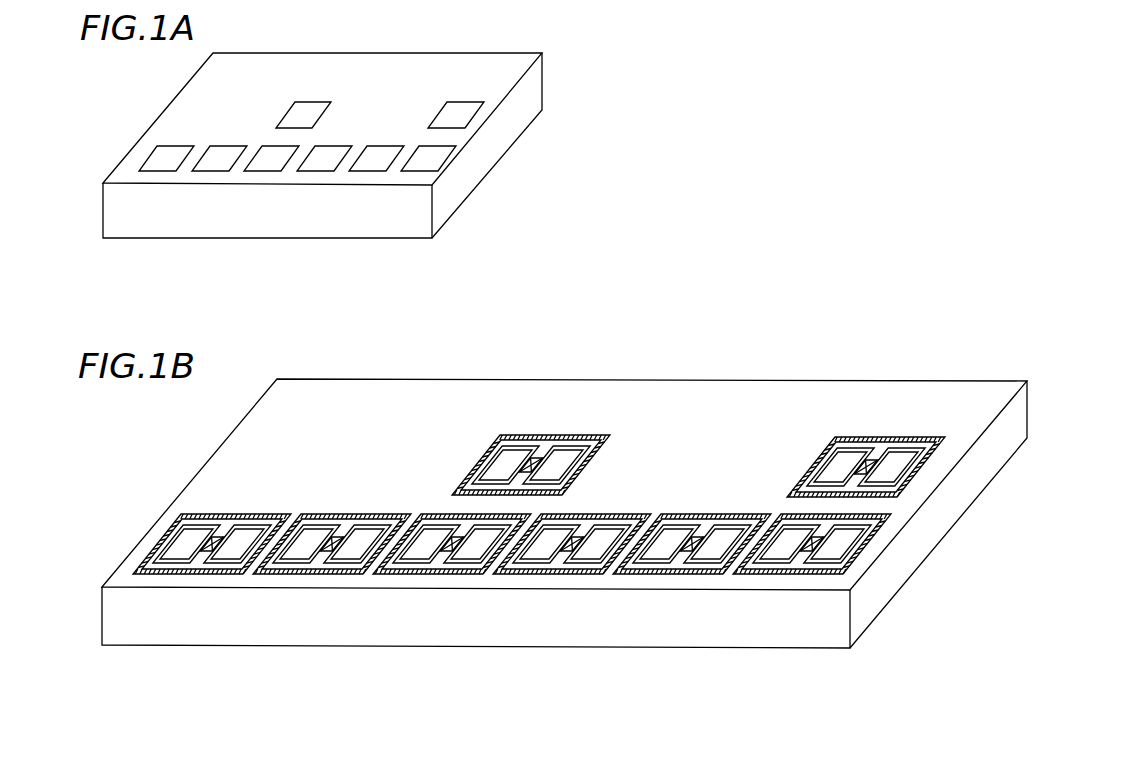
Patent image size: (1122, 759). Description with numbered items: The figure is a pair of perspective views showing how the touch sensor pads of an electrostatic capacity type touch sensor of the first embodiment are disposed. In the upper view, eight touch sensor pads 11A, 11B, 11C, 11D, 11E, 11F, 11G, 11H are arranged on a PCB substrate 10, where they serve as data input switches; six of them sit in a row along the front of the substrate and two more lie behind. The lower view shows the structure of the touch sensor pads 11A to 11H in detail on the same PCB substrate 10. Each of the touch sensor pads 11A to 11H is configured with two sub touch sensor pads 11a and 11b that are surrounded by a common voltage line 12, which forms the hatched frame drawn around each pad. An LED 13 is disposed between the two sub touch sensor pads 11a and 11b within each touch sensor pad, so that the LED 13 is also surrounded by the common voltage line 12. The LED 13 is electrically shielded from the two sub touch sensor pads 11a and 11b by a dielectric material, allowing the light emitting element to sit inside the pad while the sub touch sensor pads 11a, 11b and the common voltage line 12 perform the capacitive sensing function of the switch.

In FIG. 1A, the PCB substrate 10 is at (533, 90).
In FIG. 1B, the PCB substrate 10 is at (1017, 420).
In FIG. 1A, the touch sensor pad 11A is at (311, 100).
In FIG. 1B, the touch sensor pad 11A is at (546, 442).
In FIG. 1A, the touch sensor pad 11B is at (459, 100).
In FIG. 1B, the touch sensor pad 11B is at (907, 432).
In FIG. 1A, the touch sensor pad 11C is at (171, 142).
In FIG. 1B, the touch sensor pad 11C is at (245, 509).
In FIG. 1A, the touch sensor pad 11D is at (227, 142).
In FIG. 1B, the touch sensor pad 11D is at (323, 509).
In FIG. 1A, the touch sensor pad 11E is at (271, 142).
In FIG. 1B, the touch sensor pad 11E is at (442, 509).
In FIG. 1A, the touch sensor pad 11F is at (329, 142).
In FIG. 1B, the touch sensor pad 11F is at (620, 509).
In FIG. 1A, the touch sensor pad 11G is at (384, 142).
In FIG. 1B, the touch sensor pad 11G is at (703, 509).
In FIG. 1A, the touch sensor pad 11H is at (414, 174).
In FIG. 1B, the touch sensor pad 11H is at (792, 581).
In FIG. 1B, the sub touch sensor pad 11a is at (500, 462).
In FIG. 1B, the sub touch sensor pad 11b is at (558, 468).
In FIG. 1B, the common voltage line 12 is at (600, 445).
In FIG. 1B, the LED 13 is at (334, 541).